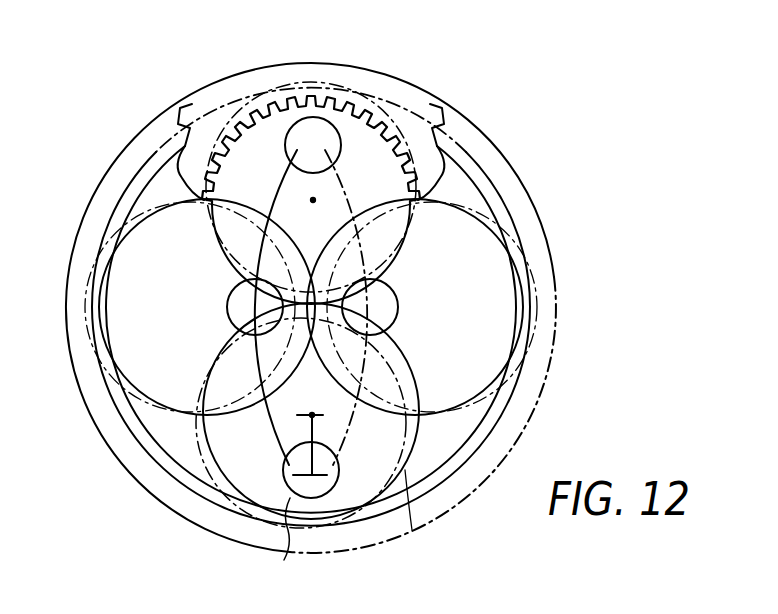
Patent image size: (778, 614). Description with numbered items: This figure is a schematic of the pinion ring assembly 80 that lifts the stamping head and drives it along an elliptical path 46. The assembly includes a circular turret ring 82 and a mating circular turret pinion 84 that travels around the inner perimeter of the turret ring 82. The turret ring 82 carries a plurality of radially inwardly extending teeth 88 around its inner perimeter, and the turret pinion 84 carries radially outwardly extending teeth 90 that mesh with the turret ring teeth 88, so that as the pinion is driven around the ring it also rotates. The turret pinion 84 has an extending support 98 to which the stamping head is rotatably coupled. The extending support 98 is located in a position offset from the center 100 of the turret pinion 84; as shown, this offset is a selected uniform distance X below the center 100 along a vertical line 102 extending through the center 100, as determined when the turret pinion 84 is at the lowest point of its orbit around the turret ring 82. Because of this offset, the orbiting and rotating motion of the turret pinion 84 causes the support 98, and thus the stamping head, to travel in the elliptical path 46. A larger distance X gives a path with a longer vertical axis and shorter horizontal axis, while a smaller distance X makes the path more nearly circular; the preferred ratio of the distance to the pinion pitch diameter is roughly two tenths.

The elliptical path 46 is at (442, 157).
The pinion ring assembly 80 is at (555, 249).
The turret ring 82 is at (553, 345).
The turret pinion 84 is at (190, 167).
The turret ring teeth 88 is at (227, 117).
The turret pinion teeth 90 is at (270, 100).
The extending support 98 is at (323, 120).
The center of turret pinion 100 is at (313, 200).
The vertical line 102 is at (313, 442).